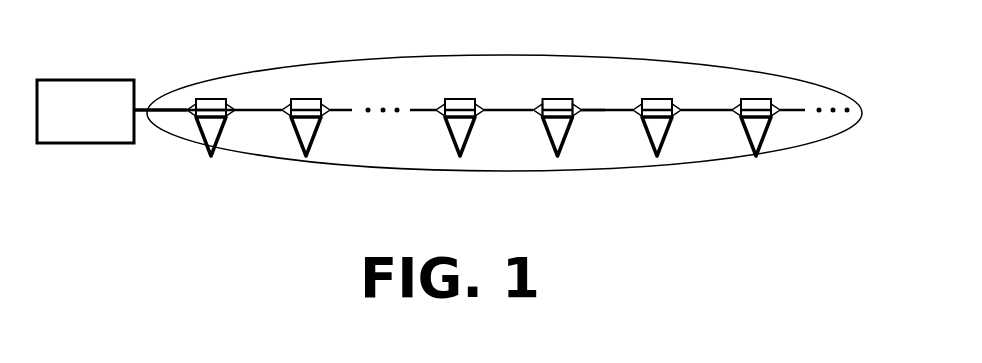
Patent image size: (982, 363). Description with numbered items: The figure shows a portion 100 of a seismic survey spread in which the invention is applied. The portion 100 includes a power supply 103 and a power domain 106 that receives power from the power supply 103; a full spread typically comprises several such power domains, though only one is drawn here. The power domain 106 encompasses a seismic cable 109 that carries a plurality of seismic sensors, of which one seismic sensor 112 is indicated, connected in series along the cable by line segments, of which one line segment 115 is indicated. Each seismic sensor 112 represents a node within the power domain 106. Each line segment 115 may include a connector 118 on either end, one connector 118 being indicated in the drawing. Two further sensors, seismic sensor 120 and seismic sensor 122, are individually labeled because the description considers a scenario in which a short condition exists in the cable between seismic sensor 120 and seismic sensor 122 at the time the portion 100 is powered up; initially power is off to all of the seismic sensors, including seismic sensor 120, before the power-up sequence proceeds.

The portion of a seismic survey spread 100 is at (106, 26).
The power supply 103 is at (134, 81).
The power domain 106 is at (268, 157).
The seismic cable 109 is at (805, 94).
The seismic sensor 112 is at (452, 137).
The line segment 115 is at (508, 107).
The connector 118 is at (586, 107).
The seismic sensor 120 is at (202, 134).
The seismic sensor 122 is at (316, 135).